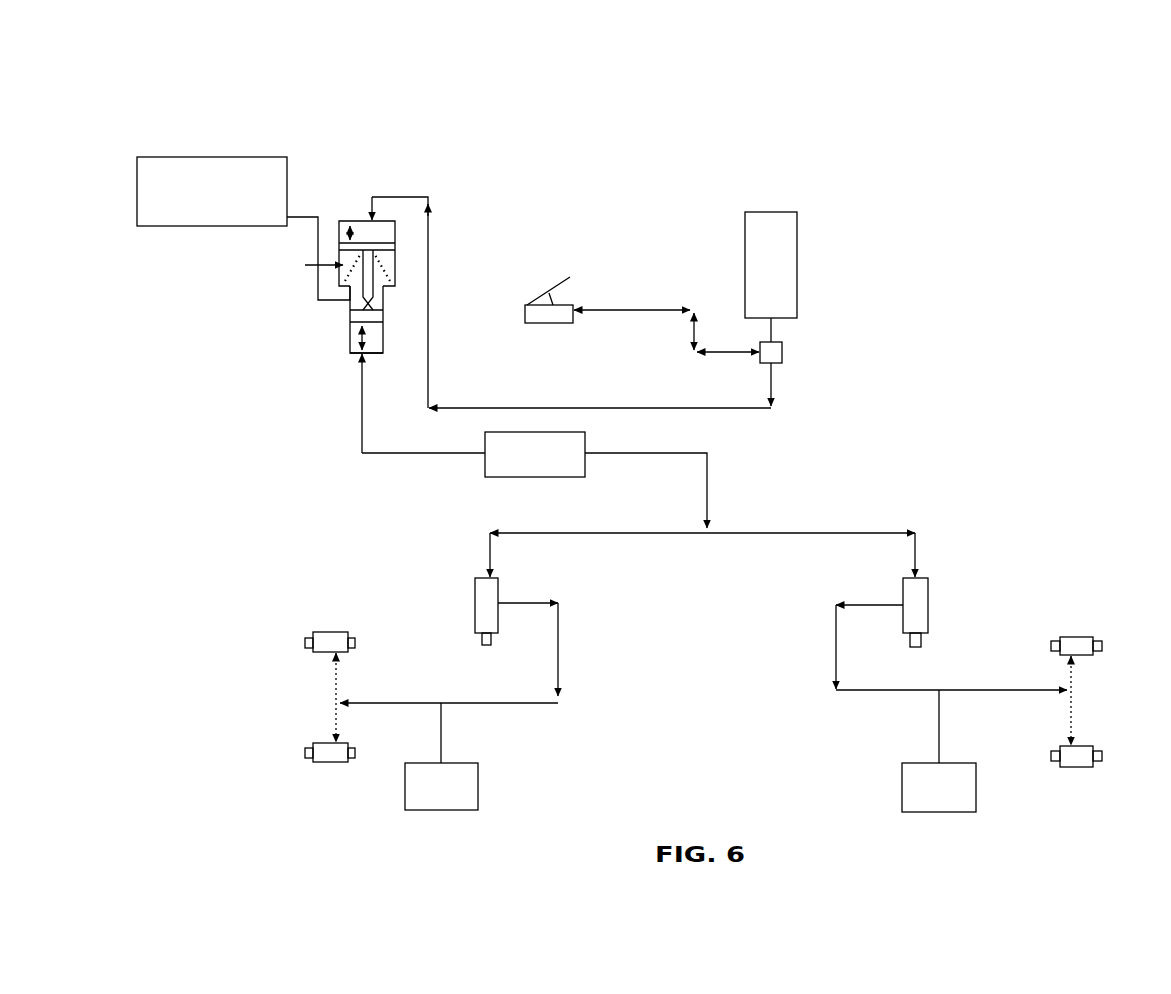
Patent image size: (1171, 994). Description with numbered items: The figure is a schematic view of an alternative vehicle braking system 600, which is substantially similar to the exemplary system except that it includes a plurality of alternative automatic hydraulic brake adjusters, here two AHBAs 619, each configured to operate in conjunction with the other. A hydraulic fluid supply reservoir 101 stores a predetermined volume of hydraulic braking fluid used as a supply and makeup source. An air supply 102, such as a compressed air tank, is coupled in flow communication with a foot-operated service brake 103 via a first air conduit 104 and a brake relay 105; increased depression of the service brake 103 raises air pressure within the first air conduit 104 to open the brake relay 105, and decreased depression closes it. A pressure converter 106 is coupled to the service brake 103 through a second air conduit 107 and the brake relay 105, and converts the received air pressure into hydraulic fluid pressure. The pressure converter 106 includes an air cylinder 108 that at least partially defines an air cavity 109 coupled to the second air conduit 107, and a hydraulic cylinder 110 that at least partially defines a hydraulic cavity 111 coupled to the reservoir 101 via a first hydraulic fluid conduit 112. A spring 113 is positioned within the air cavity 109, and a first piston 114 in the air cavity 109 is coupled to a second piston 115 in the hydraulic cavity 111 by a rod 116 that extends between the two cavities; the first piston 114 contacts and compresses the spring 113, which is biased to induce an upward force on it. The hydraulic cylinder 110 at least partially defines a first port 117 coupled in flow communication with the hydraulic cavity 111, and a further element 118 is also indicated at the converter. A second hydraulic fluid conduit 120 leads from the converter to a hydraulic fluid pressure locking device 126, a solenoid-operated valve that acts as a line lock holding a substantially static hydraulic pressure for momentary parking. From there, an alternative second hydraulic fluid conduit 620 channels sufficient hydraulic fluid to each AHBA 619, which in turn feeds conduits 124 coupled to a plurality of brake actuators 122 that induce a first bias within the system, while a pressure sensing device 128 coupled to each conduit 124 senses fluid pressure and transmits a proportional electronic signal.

The alternative vehicle braking system 600 is at (242, 93).
The hydraulic fluid supply reservoir 101 is at (197, 194).
The air supply 102 is at (792, 279).
The service brake 103 is at (527, 322).
The first air conduit 104 is at (628, 310).
The brake relay 105 is at (785, 352).
The pressure converter 106 is at (327, 152).
The second air conduit 107 is at (574, 408).
The air cylinder 108 is at (343, 223).
The air cavity 109 is at (373, 227).
The hydraulic cylinder 110 is at (351, 332).
The hydraulic cavity 111 is at (374, 335).
The first hydraulic fluid conduit 112 is at (315, 233).
The spring 113 is at (388, 277).
The first piston 114 is at (431, 206).
The second piston 115 is at (383, 318).
The rod 116 is at (378, 262).
The first port 117 is at (355, 357).
The valve element 118 is at (351, 312).
The second hydraulic fluid conduit 120 is at (361, 421).
The brake actuators 122 is at (320, 740).
The conduits 124 is at (562, 672).
The hydraulic fluid pressure locking device 126 is at (538, 469).
The pressure sensing device 128 is at (460, 801).
The alternative automatic hydraulic brake adjuster 619 is at (473, 590).
The alternative second hydraulic fluid conduit 620 is at (708, 484).